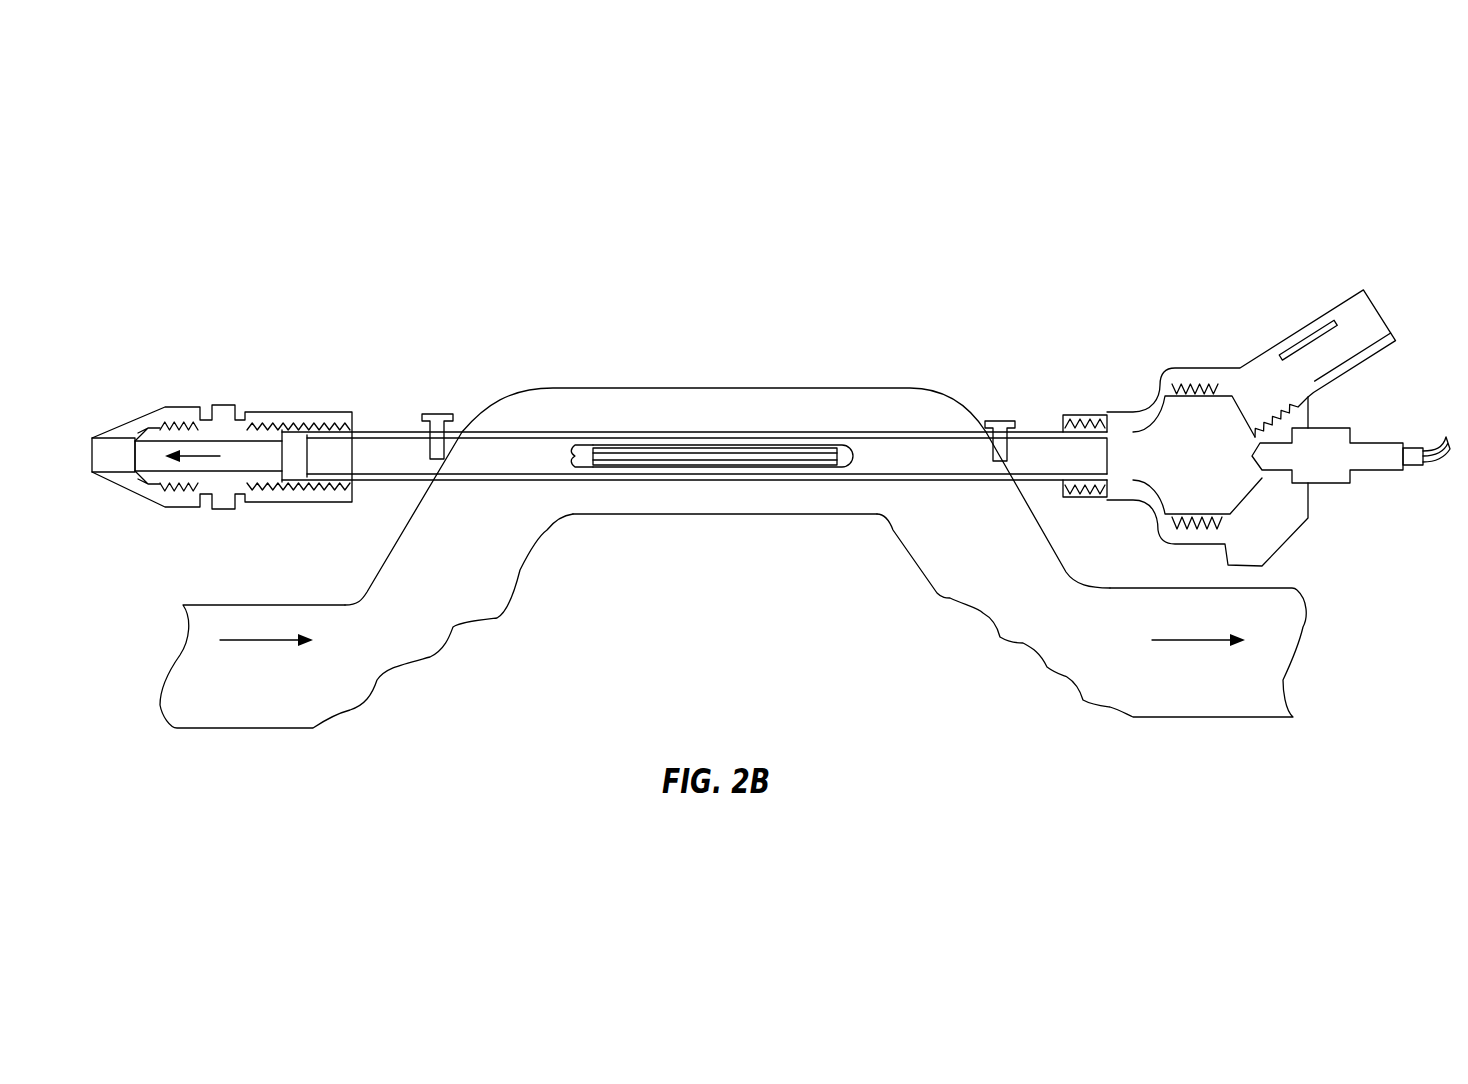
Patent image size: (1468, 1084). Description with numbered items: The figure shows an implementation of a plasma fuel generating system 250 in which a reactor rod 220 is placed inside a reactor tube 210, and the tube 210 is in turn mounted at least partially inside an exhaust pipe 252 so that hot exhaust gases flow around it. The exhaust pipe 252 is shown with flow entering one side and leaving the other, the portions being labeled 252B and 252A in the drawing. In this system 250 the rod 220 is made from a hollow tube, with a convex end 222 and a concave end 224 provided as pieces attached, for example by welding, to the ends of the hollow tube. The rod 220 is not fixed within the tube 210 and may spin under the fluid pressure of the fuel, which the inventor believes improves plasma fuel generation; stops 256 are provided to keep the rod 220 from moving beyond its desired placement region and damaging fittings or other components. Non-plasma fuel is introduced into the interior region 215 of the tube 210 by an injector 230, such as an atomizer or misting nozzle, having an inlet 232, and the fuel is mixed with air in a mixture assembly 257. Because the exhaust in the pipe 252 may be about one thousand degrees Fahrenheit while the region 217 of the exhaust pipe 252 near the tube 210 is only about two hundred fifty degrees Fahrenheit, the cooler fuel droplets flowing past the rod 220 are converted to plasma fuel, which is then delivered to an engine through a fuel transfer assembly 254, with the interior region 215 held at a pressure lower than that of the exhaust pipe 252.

The plasma fuel generating system 250 is at (736, 242).
The fuel transfer assembly 254 is at (283, 417).
The stops 256 is at (424, 414).
The reactor rod 220 is at (696, 455).
The exhaust pipe 252 is at (727, 402).
The reactor tube 210 is at (913, 430).
The interior region 215 is at (923, 450).
The mixture assembly 257 is at (1168, 443).
The injector 230 is at (1362, 432).
The inlet 232 is at (1425, 467).
The concave end 224 is at (587, 468).
The region 217 is at (722, 503).
The convex end 222 is at (847, 465).
The upstream flow region 252B is at (297, 692).
The downstream flow region 252A is at (1228, 692).